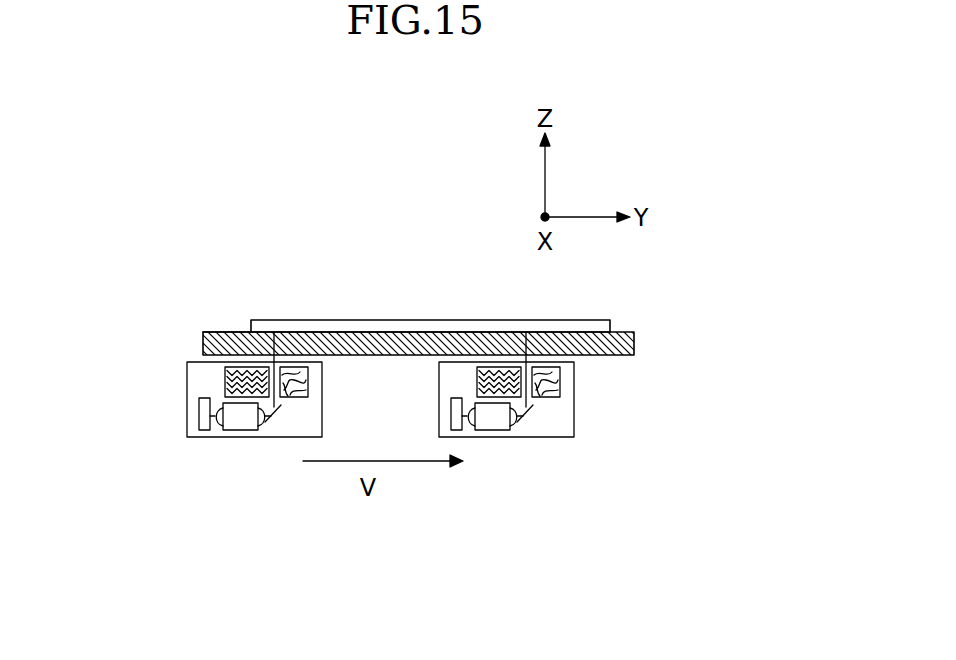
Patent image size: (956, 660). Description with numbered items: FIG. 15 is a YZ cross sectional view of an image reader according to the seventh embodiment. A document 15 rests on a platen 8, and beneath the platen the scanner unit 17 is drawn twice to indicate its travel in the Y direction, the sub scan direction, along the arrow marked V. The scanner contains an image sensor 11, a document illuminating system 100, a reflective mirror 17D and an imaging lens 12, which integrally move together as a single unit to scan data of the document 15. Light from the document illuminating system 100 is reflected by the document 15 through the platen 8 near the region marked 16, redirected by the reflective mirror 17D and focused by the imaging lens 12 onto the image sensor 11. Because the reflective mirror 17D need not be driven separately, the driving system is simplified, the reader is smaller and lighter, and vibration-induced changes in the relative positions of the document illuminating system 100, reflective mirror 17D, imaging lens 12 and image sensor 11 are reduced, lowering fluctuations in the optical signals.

The platen 8 is at (634, 343).
The document 15 is at (370, 319).
The mounting surface 16 is at (210, 332).
The document illuminating system 100 is at (160, 380).
The image sensor 11 is at (197, 411).
The imaging lens 12 is at (244, 432).
The housing 17 is at (198, 437).
The reflective mirror 17D is at (279, 408).